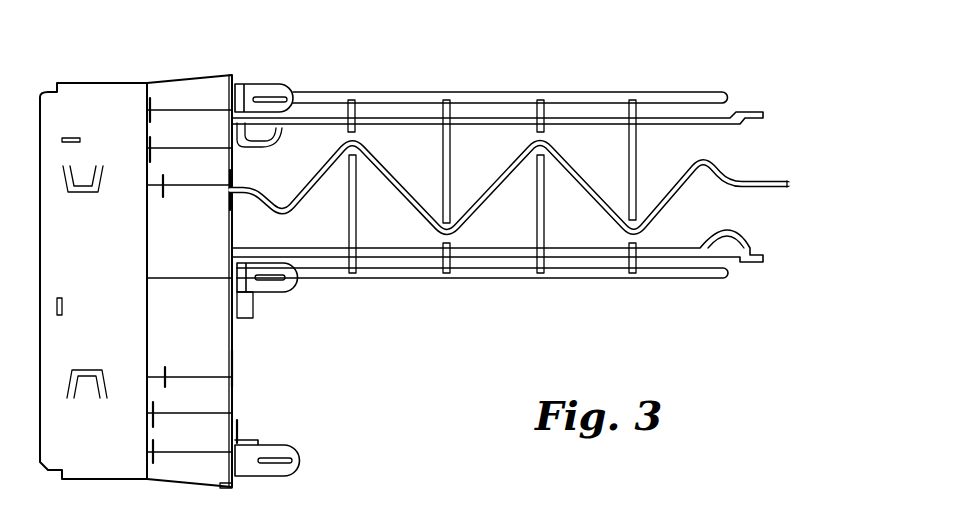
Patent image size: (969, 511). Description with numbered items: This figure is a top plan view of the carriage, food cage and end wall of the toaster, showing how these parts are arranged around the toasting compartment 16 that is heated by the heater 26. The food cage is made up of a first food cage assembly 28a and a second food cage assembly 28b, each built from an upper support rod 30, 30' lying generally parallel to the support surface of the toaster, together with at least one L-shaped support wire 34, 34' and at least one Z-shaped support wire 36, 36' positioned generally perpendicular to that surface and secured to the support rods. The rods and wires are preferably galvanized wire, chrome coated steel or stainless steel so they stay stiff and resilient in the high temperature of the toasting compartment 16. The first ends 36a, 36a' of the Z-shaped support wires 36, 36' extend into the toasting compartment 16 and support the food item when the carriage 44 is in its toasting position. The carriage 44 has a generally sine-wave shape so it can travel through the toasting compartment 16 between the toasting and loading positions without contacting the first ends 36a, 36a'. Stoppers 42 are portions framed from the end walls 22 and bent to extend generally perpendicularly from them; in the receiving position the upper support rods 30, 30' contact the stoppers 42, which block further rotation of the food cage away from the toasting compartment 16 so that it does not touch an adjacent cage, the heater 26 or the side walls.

The toasting compartment 16 is at (316, 146).
The end walls 22 is at (240, 345).
The heater 26 is at (340, 97).
The first food cage assembly 28a is at (770, 114).
The second food cage assembly 28b is at (770, 257).
The upper support rod 30 is at (498, 91).
The upper support rod 30' is at (482, 288).
The L-shaped support wire 34 is at (510, 75).
The L-shaped support wire 34' is at (498, 274).
The Z-shaped support wire 36 is at (524, 125).
The Z-shaped support wire 36' is at (492, 245).
The first end of Z-shaped support wire 36a is at (529, 142).
The first end of Z-shaped support wire 36a' is at (403, 198).
The stoppers 42 is at (245, 107).
The carriage 44 is at (730, 178).